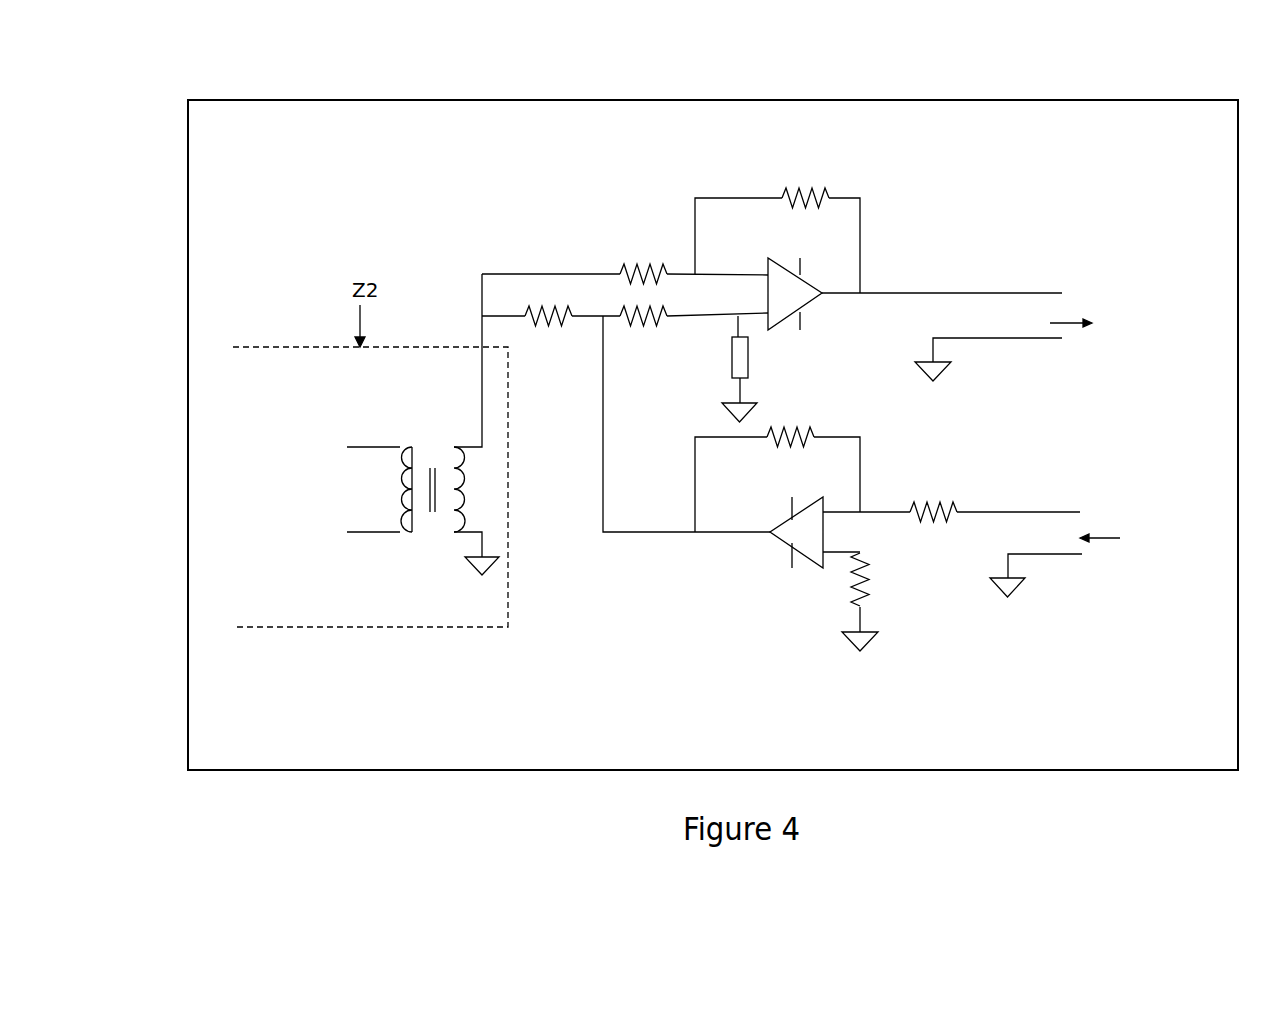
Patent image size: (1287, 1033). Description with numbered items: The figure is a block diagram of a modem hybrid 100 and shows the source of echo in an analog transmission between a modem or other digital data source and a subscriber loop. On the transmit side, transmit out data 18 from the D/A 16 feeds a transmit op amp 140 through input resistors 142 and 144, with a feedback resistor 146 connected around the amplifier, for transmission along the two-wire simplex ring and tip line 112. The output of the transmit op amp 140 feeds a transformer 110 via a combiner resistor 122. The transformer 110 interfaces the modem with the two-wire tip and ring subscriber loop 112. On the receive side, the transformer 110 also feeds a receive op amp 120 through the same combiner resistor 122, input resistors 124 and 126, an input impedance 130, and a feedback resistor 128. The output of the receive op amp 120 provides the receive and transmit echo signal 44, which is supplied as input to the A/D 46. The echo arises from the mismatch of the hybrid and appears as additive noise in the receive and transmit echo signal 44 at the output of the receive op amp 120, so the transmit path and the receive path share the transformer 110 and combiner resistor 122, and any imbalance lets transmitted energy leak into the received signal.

The modem hybrid 100 is at (667, 100).
The two-wire tip and ring line 112 is at (280, 467).
The transformer 110 is at (412, 448).
The combiner resistor 122 is at (527, 310).
The input resistor 124 is at (632, 252).
The input resistor 126 is at (622, 317).
The feedback resistor 128 is at (795, 185).
The receive op amp 120 is at (807, 280).
The input impedance 130 is at (748, 378).
The receive and transmit echo signal 44 is at (1050, 305).
The A/D 46 is at (1134, 357).
The feedback resistor 146 is at (797, 447).
The transmit op amp 140 is at (778, 542).
The input resistor 144 is at (870, 573).
The input resistor 142 is at (925, 490).
The transmit out data 18 is at (1053, 530).
The D/A 16 is at (1156, 565).